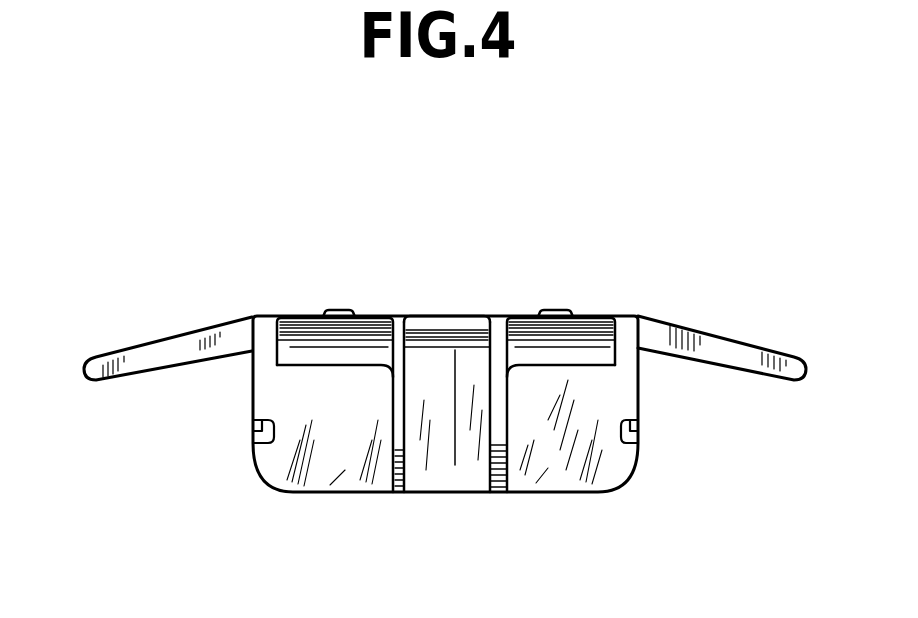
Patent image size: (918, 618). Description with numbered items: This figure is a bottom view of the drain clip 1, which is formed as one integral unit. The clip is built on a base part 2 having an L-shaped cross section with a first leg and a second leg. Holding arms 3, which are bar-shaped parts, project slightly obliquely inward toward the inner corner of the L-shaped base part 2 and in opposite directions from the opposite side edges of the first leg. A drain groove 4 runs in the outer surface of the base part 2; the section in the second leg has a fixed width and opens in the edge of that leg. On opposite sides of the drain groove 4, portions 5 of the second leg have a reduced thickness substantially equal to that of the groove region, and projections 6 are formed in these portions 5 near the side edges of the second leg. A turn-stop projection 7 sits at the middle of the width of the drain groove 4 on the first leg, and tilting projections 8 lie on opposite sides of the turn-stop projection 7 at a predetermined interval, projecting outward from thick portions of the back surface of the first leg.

The drain clip 1 is at (633, 253).
The base part 2 is at (597, 493).
The holding arms 3 is at (185, 340).
The drain groove 4 is at (452, 470).
The portions 5 is at (330, 477).
The projections 6 is at (253, 432).
The turn-stop projection 7 is at (447, 317).
The tilting projections 8 is at (338, 310).